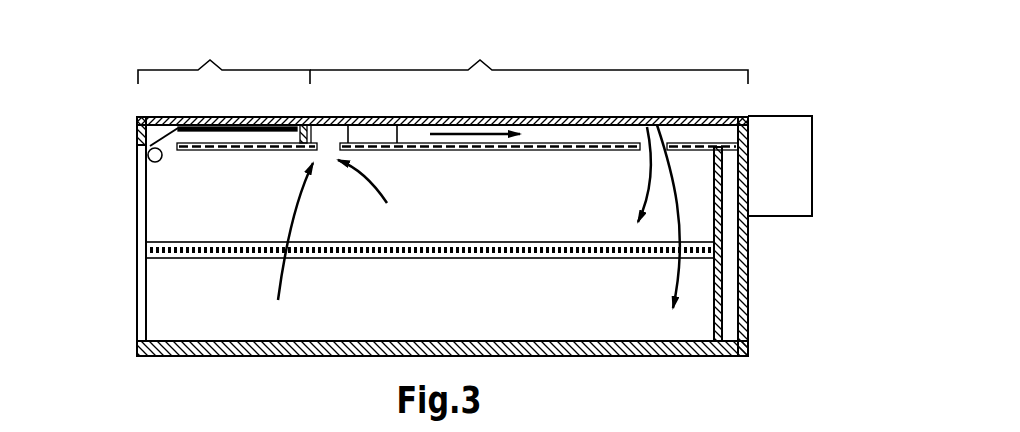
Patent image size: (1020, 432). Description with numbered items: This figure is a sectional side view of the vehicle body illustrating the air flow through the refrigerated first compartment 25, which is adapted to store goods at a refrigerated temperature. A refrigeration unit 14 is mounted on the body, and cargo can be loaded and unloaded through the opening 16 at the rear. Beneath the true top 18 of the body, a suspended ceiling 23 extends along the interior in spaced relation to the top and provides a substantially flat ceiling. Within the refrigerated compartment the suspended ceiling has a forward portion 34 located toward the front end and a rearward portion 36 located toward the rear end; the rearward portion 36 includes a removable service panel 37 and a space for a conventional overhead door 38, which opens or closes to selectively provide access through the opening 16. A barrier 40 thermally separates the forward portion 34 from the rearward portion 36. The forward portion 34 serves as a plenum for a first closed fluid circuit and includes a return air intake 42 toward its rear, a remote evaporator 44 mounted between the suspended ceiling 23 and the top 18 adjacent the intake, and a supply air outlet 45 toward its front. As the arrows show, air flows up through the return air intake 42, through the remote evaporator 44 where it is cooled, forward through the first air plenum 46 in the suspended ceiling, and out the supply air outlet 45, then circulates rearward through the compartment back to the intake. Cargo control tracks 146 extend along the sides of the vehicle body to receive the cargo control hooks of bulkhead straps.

The refrigeration unit 14 is at (795, 166).
The opening 16 is at (110, 302).
The top 18 is at (604, 117).
The suspended ceiling 23 is at (552, 150).
The first compartment 25 is at (166, 204).
The forward portion 34 is at (529, 59).
The rearward portion 36 is at (224, 58).
The removable service panel 37 is at (251, 150).
The overhead door 38 is at (148, 155).
The barrier 40 is at (316, 117).
The return air intake 42 is at (338, 148).
The remote evaporator 44 is at (374, 133).
The supply air outlet 45 is at (648, 160).
The first air plenum 46 is at (574, 135).
The cargo control tracks 146 is at (383, 255).